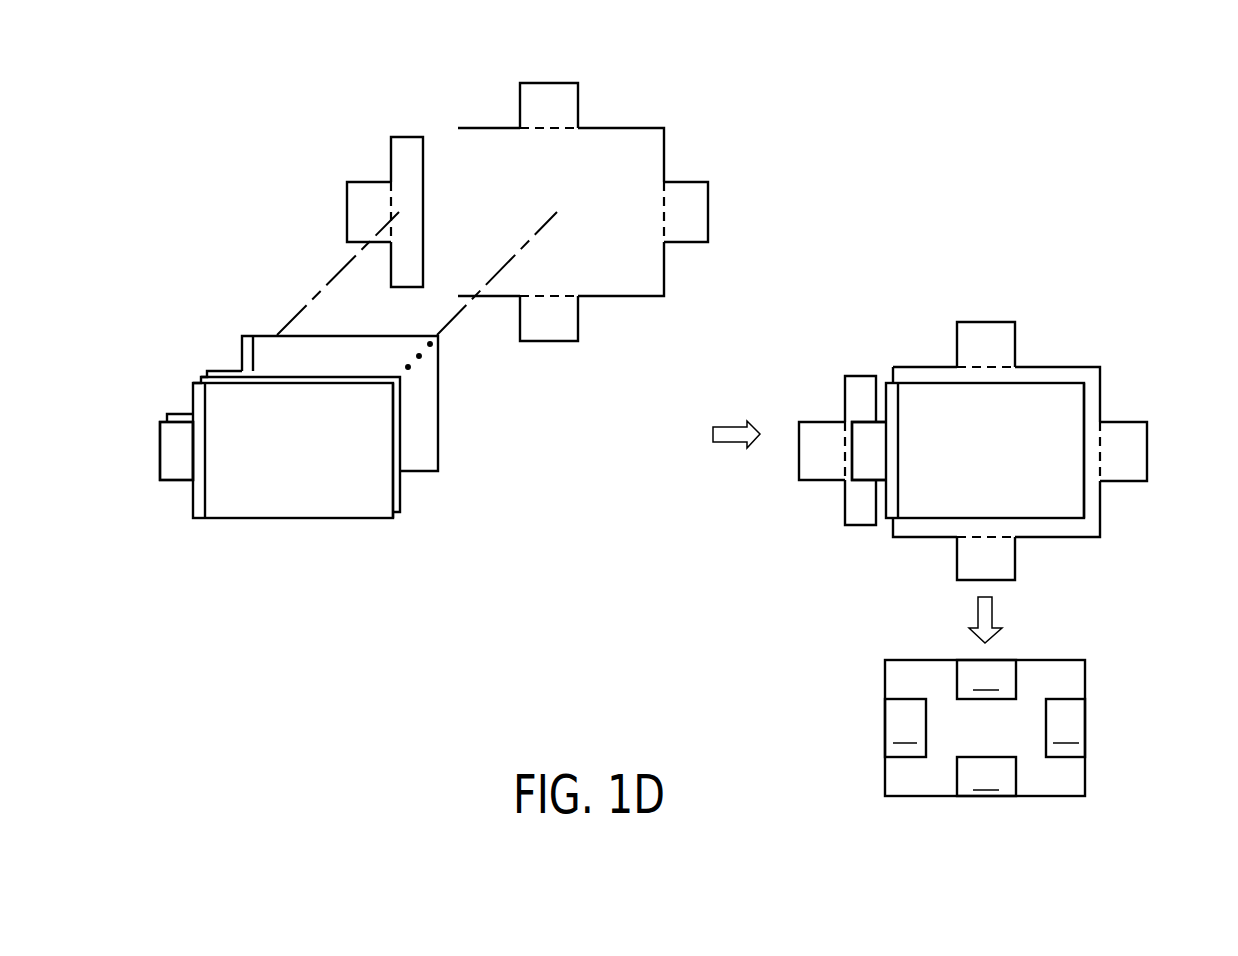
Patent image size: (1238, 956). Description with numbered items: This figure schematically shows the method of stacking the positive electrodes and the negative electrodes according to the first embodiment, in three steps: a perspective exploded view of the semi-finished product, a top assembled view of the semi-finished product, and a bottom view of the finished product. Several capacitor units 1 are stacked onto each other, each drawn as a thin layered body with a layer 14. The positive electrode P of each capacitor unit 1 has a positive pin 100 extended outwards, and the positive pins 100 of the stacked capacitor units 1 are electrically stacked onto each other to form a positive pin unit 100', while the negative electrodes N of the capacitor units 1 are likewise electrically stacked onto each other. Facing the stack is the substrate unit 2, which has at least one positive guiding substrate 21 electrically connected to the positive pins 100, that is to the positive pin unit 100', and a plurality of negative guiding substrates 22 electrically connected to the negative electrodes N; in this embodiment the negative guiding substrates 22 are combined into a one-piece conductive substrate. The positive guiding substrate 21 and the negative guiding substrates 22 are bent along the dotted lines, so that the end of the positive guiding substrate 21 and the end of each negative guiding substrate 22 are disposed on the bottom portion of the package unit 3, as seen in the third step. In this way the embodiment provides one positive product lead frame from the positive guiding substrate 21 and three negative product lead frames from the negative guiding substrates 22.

The capacitor unit 1 is at (277, 520).
The layer of battery cell 14 is at (200, 513).
The positive pin 100 is at (168, 379).
The positive pin unit 100' is at (492, 437).
The positive electrode P is at (157, 477).
The negative electrode N is at (350, 500).
The substrate unit 2 is at (306, 130).
The positive guiding substrate 21 is at (347, 207).
The negative guiding substrate 22 is at (578, 105).
The package unit 3 is at (1090, 673).